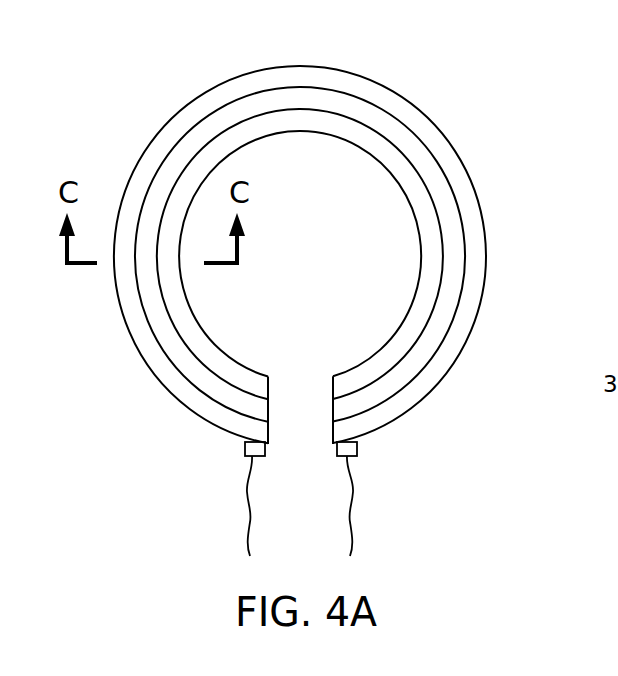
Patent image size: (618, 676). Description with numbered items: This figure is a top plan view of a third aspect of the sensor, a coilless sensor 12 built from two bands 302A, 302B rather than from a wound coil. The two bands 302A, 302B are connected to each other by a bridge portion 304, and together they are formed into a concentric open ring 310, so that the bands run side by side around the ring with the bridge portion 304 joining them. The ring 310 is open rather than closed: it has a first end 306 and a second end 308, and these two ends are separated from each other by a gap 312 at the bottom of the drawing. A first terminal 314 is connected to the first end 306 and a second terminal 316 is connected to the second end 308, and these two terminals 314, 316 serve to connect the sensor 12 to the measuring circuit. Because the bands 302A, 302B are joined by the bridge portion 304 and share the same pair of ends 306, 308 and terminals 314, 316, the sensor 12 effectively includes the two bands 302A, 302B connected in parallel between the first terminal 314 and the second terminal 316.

The concentric open ring 310 is at (101, 55).
The coilless sensor 12 is at (482, 53).
The band 302A is at (401, 176).
The band 302B is at (469, 183).
The bridge portion 304 is at (456, 249).
The first end 306 is at (276, 352).
The second end 308 is at (352, 349).
The gap 312 is at (300, 466).
The first terminal 314 is at (248, 512).
The second terminal 316 is at (355, 512).